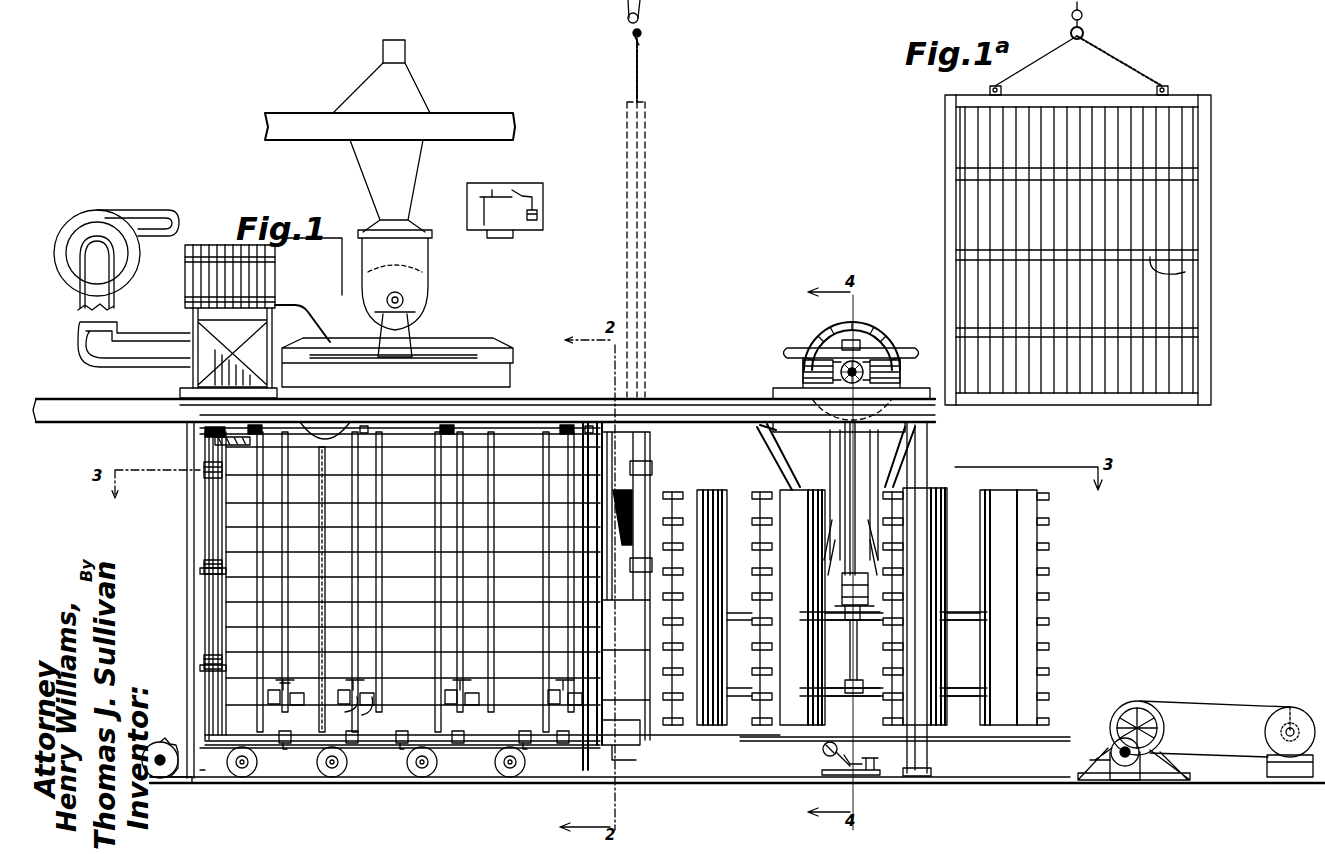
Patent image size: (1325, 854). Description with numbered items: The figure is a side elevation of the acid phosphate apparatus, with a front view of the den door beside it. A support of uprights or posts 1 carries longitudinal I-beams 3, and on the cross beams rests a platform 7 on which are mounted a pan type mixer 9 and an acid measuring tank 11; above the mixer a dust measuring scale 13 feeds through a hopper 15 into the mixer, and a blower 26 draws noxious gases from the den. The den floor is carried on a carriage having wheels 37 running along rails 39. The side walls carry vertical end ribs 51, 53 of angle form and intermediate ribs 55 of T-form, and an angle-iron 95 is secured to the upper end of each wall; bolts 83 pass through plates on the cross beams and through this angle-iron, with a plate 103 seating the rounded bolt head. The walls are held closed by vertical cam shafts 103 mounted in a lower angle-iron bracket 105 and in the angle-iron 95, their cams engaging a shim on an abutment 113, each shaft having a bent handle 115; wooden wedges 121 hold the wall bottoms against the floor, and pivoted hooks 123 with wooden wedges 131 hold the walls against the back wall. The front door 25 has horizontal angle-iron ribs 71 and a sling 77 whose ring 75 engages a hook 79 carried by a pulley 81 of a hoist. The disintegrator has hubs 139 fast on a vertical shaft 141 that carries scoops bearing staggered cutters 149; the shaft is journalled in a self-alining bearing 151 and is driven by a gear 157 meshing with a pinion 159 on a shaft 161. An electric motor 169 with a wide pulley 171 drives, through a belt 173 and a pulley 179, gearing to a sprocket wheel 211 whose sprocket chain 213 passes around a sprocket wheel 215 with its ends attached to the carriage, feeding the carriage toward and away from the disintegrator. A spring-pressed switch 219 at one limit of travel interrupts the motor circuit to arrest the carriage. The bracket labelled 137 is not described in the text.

In FIG. 1, the uprights or posts 1 is at (190, 492).
In FIG. 1, the longitudinal I-beams 3 is at (700, 399).
In FIG. 1, the platform 7 is at (225, 583).
In FIG. 1, the pan type mixer 9 is at (500, 350).
In FIG. 1, the acid measuring tank 11 is at (276, 274).
In FIG. 1, the dust measuring scale 13 is at (526, 236).
In FIG. 1, the hopper 15 is at (425, 272).
In FIG. 1, the front door 25 is at (652, 260).
In FIG. 1A, the front door 25 is at (939, 210).
In FIG. 1, the blower 26 is at (82, 222).
In FIG. 1, the wheels 37 is at (347, 765).
In FIG. 1, the rails 39 is at (730, 770).
In FIG. 1, the end rib 51 is at (218, 617).
In FIG. 1, the end rib 53 is at (642, 740).
In FIG. 1, the intermediate ribs 55 is at (547, 613).
In FIG. 1A, the angle-iron ribs 71 is at (1185, 272).
In FIG. 1, the ring 75 is at (632, 41).
In FIG. 1A, the ring 75 is at (1084, 34).
In FIG. 1, the sling 77 is at (641, 70).
In FIG. 1A, the sling 77 is at (1130, 60).
In FIG. 1, the hook 79 is at (643, 33).
In FIG. 1A, the hook 79 is at (1083, 17).
In FIG. 1, the pulley 81 is at (640, 17).
In FIG. 1, the bolts 83 is at (575, 425).
In FIG. 1, the angle-iron 95 is at (296, 441).
In FIG. 1, the vertical shafts 103 is at (545, 488).
In FIG. 1, the lower angle-iron bracket 105 is at (362, 692).
In FIG. 1, the abutment 113 is at (450, 428).
In FIG. 1, the handle 115 is at (556, 690).
In FIG. 1, the wooden wedges 121 is at (450, 735).
In FIG. 1, the hooks 123 is at (205, 669).
In FIG. 1, the wooden wedges 131 is at (208, 655).
In FIG. 1, the guide bracket 137 is at (642, 468).
In FIG. 1, the hubs 139 is at (850, 700).
In FIG. 1, the vertical shaft 141 is at (845, 457).
In FIG. 1, the cutters 149 is at (683, 521).
In FIG. 1, the bearing 151 is at (868, 592).
In FIG. 1, the gear 157 is at (820, 356).
In FIG. 1, the pinion 159 is at (843, 377).
In FIG. 1, the shaft 161 is at (803, 370).
In FIG. 1, the electric motor 169 is at (1275, 715).
In FIG. 1, the wide pulley 171 is at (1290, 707).
In FIG. 1, the belt 173 is at (1203, 716).
In FIG. 1, the pulley 179 is at (1155, 710).
In FIG. 1, the sprocket wheel 211 is at (1165, 745).
In FIG. 1, the sprocket chain 213 is at (982, 742).
In FIG. 1, the sprocket wheel 215 is at (163, 742).
In FIG. 1, the spring-pressed switch 219 is at (868, 758).